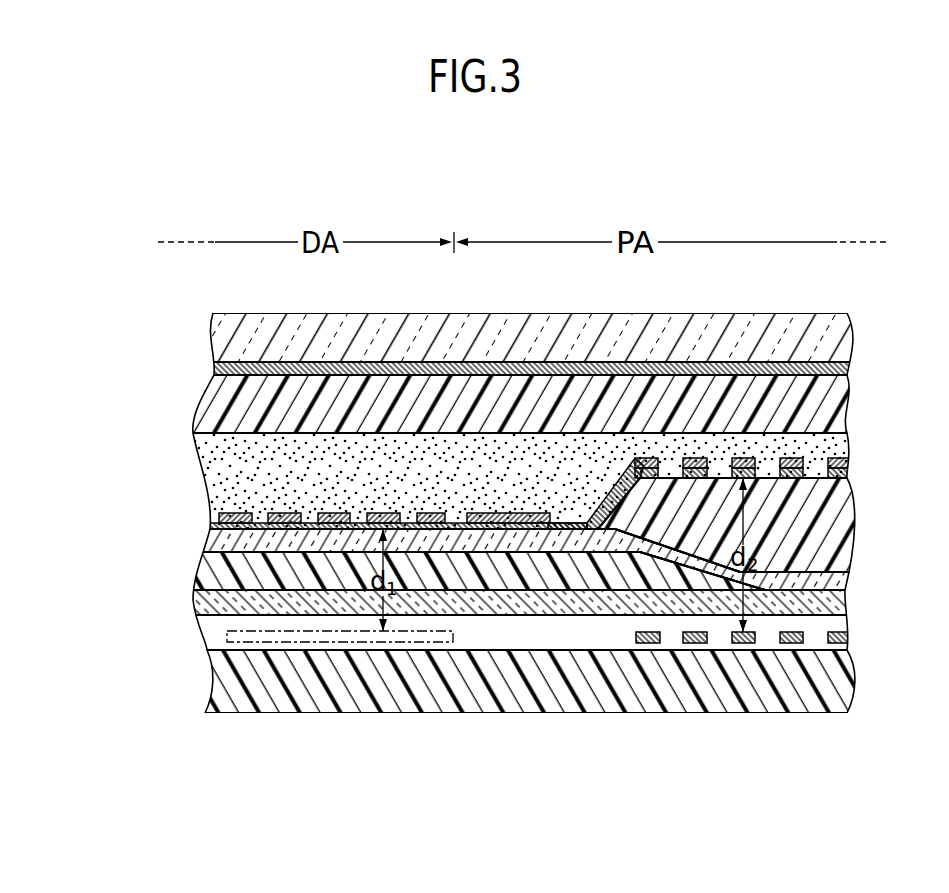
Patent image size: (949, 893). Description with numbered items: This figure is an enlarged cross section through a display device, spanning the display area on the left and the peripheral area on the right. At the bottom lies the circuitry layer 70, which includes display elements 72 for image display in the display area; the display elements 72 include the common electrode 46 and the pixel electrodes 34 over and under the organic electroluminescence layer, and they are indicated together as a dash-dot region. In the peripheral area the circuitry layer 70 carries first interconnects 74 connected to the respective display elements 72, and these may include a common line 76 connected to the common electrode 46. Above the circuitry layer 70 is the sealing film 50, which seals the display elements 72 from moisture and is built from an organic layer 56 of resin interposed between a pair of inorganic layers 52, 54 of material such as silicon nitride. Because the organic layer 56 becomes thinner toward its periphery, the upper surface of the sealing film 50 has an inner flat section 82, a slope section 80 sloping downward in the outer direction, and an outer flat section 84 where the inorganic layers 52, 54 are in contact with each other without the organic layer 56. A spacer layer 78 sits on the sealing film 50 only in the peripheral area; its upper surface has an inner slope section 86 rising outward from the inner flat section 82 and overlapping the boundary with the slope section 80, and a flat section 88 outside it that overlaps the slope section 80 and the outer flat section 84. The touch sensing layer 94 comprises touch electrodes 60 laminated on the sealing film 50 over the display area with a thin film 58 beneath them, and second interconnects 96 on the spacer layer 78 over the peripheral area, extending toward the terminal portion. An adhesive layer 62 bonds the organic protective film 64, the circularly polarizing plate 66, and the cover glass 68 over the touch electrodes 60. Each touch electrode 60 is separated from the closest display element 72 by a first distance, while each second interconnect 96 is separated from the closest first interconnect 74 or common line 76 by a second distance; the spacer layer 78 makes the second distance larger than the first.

The pixel electrodes 34 is at (303, 657).
The common electrode 46 is at (340, 703).
The sealing film 50 is at (497, 442).
The inorganic layer 52 is at (213, 603).
The inorganic layer 54 is at (227, 542).
The organic layer 56 is at (220, 573).
The electrode layer 58 is at (263, 525).
The touch electrodes 60 is at (387, 520).
The adhesive layer 62 is at (217, 490).
The organic protective film 64 is at (217, 406).
The circularly polarizing plate 66 is at (217, 370).
The cover glass 68 is at (223, 340).
The circuitry layer 70 is at (489, 695).
The display elements 72 is at (340, 703).
The first interconnects 74 is at (626, 641).
The common line 76 is at (742, 643).
The spacer layer 78 is at (843, 517).
The slope section 80 is at (716, 556).
The inner flat section 82 is at (598, 527).
The outer flat section 84 is at (823, 563).
The inner slope section 86 is at (612, 490).
The flat section 88 is at (744, 458).
The touch sensing layer 94 is at (375, 393).
The second interconnects 96 is at (778, 473).